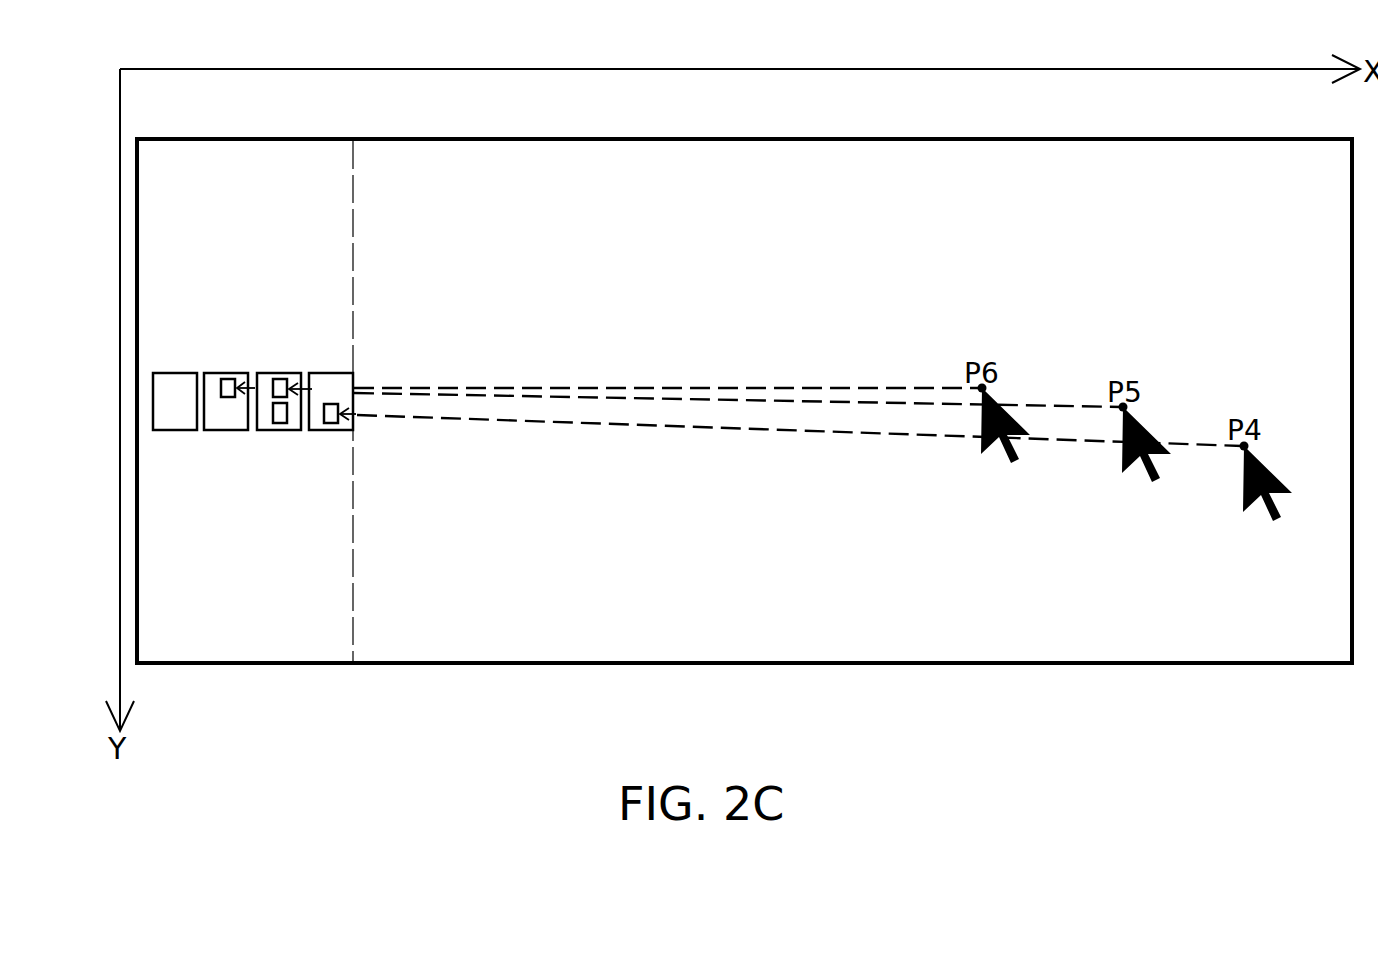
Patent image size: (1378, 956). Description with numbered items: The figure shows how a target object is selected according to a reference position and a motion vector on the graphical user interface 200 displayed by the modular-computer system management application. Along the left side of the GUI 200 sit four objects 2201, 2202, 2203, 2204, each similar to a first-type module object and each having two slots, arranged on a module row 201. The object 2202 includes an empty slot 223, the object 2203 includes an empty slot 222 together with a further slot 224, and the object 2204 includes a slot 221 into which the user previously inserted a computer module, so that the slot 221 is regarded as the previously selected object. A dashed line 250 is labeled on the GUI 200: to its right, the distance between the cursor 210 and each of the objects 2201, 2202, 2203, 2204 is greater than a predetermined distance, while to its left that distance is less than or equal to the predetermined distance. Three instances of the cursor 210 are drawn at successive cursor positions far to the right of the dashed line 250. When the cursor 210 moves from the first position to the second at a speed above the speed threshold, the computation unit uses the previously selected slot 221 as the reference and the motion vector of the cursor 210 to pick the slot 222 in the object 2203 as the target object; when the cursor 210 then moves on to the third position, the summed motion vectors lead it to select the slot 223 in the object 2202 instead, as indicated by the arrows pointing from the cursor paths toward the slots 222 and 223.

The graphical user interface 200 is at (768, 593).
The module row 201 is at (100, 402).
The cursor 210 is at (981, 432).
The slot 221 is at (339, 418).
The empty slot 222 is at (289, 383).
The empty slot 223 is at (228, 378).
The icon 224 is at (278, 423).
The dashed line 250 is at (353, 569).
The object 2201 is at (175, 372).
The object 2202 is at (226, 431).
The object 2203 is at (278, 372).
The object 2204 is at (330, 431).